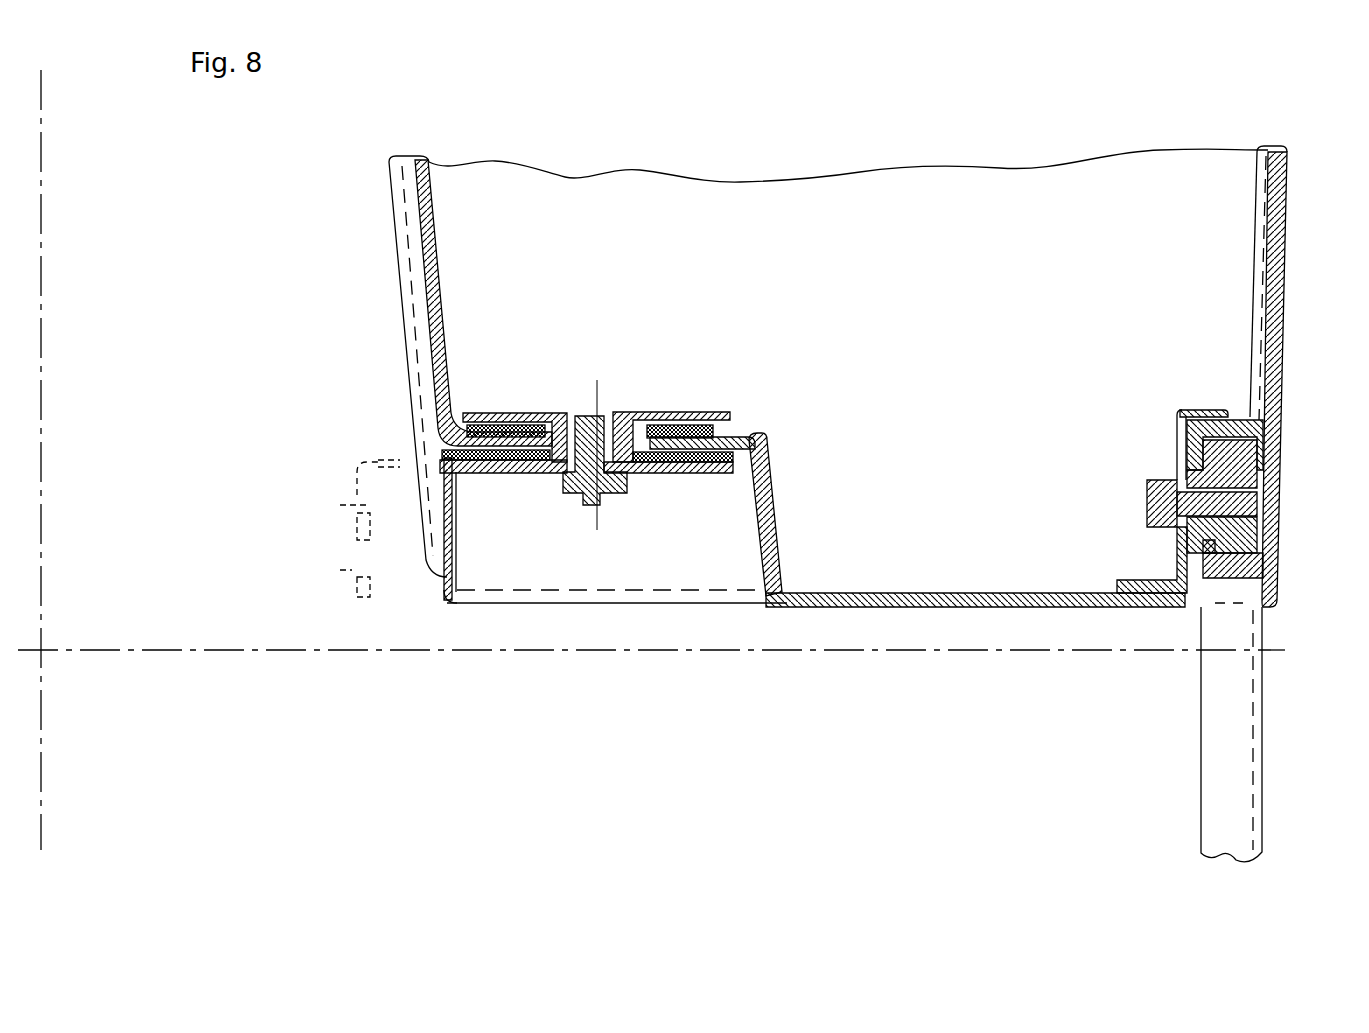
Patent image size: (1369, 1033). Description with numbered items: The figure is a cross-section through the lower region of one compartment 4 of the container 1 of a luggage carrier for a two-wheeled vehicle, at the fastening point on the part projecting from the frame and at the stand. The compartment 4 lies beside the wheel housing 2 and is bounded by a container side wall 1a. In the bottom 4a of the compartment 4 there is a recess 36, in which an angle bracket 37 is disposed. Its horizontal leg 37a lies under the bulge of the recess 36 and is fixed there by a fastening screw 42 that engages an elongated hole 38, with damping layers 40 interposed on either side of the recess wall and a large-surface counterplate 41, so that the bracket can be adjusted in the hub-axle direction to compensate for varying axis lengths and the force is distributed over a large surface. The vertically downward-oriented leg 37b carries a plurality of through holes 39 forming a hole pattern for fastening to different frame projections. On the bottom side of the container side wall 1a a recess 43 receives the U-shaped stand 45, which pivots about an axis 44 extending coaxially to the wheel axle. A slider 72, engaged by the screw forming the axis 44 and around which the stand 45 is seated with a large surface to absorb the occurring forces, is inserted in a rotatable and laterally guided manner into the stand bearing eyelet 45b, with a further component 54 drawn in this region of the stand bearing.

The container 1 is at (1302, 376).
The container side wall 1a is at (1283, 268).
The wheel housing 2 is at (412, 221).
The compartment 4 is at (942, 228).
The bottom 4a is at (957, 603).
The recess 36 is at (765, 510).
The angle bracket 37 is at (460, 560).
The horizontal leg 37a is at (528, 463).
The vertical leg 37b is at (443, 562).
The elongated hole 38 is at (632, 463).
The through holes 39 is at (496, 445).
The damping layers 40 is at (726, 560).
The cover strip 41 is at (697, 415).
The fastening screw 42 is at (610, 417).
The recess 43 is at (1177, 423).
The axis 44 is at (1143, 503).
The U-shaped stand 45 is at (1243, 740).
The stand bearing eyelet 45b is at (1267, 442).
The angle piece 54 is at (1173, 570).
The slider 72 is at (1260, 472).